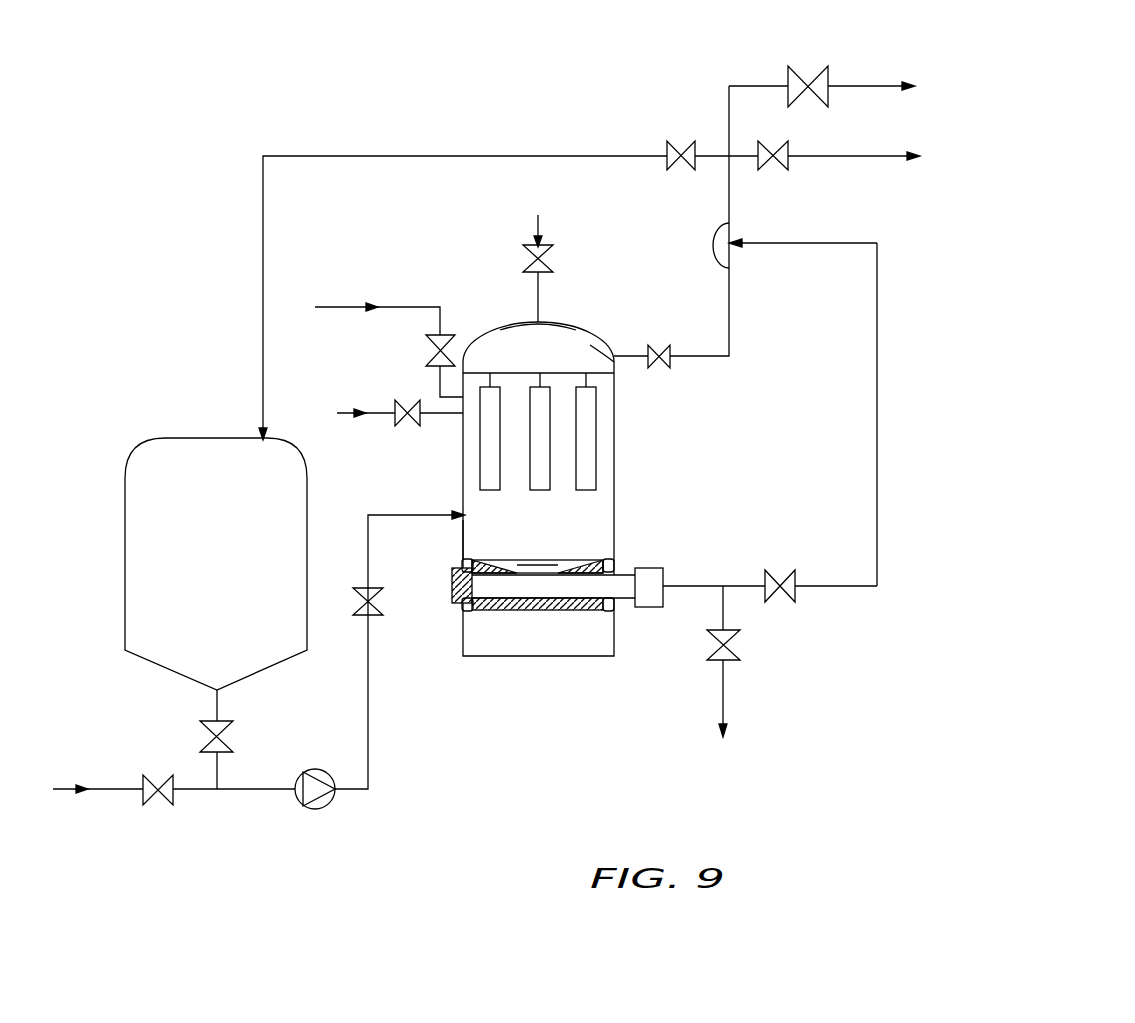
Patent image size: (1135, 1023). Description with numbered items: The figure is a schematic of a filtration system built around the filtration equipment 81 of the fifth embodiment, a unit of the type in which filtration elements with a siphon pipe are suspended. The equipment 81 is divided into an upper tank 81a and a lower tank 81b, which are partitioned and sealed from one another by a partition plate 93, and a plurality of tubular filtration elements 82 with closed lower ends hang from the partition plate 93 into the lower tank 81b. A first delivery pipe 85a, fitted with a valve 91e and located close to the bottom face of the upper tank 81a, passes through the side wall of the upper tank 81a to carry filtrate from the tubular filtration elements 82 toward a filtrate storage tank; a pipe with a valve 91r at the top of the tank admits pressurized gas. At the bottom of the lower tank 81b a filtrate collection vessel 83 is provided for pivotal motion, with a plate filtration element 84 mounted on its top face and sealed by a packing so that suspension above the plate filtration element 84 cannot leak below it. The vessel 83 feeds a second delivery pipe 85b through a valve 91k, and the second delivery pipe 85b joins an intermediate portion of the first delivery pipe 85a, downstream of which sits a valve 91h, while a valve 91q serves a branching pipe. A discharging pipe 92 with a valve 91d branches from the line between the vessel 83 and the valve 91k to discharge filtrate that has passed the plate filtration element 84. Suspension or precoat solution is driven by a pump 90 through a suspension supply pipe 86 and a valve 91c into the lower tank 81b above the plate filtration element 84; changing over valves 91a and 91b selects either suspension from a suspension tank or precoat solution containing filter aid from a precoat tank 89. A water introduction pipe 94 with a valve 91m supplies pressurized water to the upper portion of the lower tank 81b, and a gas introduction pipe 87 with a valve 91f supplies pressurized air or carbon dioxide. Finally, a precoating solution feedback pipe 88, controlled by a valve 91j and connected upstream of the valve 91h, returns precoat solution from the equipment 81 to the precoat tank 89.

The filtration equipment 81 is at (561, 735).
The upper tank 81a is at (582, 322).
The lower tank 81b is at (463, 540).
The tubular filtration elements 82 is at (592, 417).
The filtrate collection vessel 83 is at (548, 612).
The plate filtration element 84 is at (585, 560).
The first delivery pipe 85a is at (722, 232).
The second delivery pipe 85b is at (848, 243).
The suspension supply pipe 86 is at (368, 758).
The gas introduction pipe 87 is at (405, 307).
The precoating solution feedback pipe 88 is at (372, 156).
The precoat tank 89 is at (192, 440).
The pump 90 is at (318, 808).
The valve 91a is at (143, 804).
The valve 91b is at (233, 745).
The valve 91c is at (376, 612).
The valve 91d is at (711, 636).
The valve 91e is at (662, 364).
The valve 91f is at (430, 343).
The valve 91h is at (784, 146).
The valve 91j is at (672, 148).
The valve 91k is at (788, 598).
The valve 91m is at (393, 410).
The valve 91q is at (815, 74).
The valve 91r is at (530, 252).
The discharging pipe 92 is at (723, 695).
The partition plate 93 is at (580, 373).
The water introduction pipe 94 is at (450, 415).